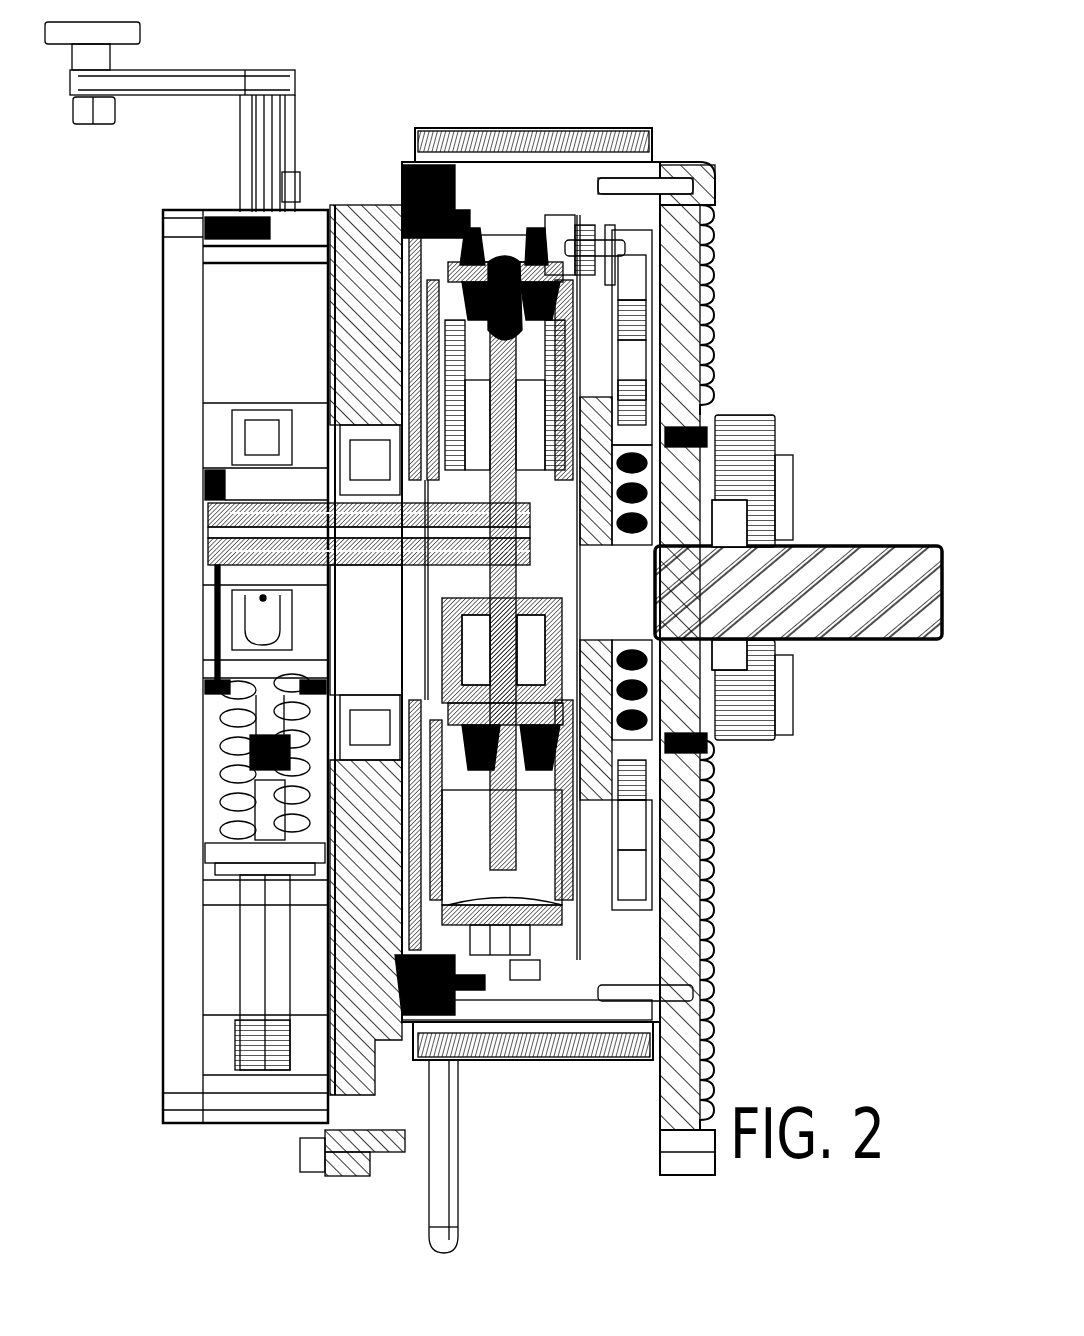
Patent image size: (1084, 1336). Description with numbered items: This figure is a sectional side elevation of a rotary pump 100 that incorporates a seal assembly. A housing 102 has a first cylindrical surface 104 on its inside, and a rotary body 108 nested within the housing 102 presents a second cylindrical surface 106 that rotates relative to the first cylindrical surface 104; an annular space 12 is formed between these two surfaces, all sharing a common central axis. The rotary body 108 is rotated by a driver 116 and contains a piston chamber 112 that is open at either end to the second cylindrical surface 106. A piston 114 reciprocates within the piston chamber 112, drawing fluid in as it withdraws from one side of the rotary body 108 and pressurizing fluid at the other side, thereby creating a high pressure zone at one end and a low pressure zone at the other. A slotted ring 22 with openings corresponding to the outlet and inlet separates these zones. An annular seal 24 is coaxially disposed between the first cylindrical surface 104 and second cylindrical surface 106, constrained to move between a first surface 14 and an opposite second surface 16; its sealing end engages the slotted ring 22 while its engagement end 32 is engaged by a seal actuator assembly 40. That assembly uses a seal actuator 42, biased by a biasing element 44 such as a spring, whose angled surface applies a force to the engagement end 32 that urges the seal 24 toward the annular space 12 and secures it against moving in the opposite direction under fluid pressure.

The rotary pump 100 is at (858, 86).
The annular space 12 is at (503, 232).
The first surface 14 is at (520, 216).
The second surface 16 is at (545, 222).
The slotted ring 22 is at (497, 238).
The seal 24 is at (560, 242).
The engagement end 32 is at (582, 250).
The seal actuator assembly 40 is at (705, 262).
The seal actuator 42 is at (660, 282).
The biasing element 44 is at (690, 382).
The housing 102 is at (705, 935).
The first cylindrical surface 104 is at (470, 258).
The second cylindrical surface 106 is at (380, 230).
The rotary body 108 is at (400, 355).
The piston chamber 112 is at (530, 865).
The piston 114 is at (576, 728).
The driver 116 is at (855, 602).